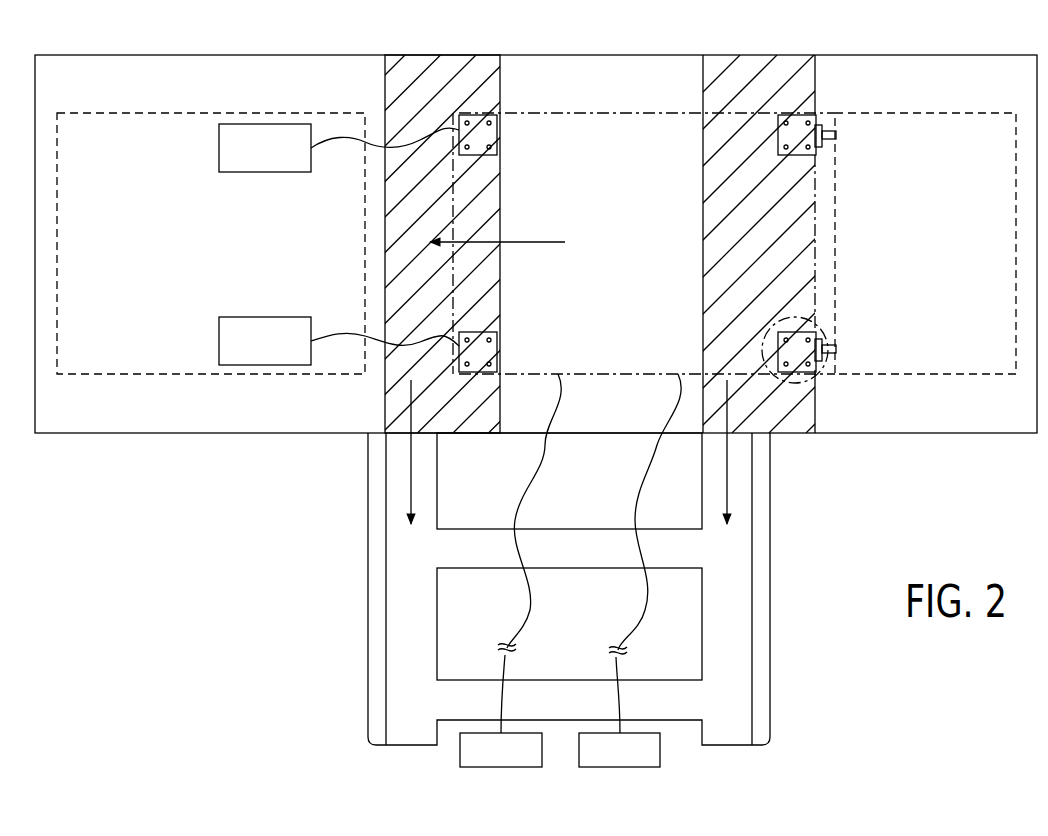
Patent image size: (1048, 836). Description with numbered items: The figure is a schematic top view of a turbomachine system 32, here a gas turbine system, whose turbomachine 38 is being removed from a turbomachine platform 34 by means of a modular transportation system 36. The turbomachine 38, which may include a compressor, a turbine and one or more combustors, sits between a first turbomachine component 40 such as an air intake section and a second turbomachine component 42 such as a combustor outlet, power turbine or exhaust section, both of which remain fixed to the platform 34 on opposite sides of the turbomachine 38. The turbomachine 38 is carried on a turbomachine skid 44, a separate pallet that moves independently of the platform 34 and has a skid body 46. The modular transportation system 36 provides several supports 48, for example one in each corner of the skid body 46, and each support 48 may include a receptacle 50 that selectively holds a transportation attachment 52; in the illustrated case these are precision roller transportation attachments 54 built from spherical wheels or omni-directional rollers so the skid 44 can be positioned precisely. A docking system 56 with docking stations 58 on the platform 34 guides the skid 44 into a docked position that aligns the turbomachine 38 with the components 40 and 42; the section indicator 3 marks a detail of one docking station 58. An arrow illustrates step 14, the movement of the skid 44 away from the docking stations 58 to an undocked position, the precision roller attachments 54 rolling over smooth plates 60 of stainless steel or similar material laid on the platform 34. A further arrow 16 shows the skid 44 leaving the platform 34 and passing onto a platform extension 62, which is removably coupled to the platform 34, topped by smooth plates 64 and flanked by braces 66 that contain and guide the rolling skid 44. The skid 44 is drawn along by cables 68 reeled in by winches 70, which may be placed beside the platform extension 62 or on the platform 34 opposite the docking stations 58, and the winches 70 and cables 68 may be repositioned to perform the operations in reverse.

The section line 3- 3 is at (822, 318).
The step of moving the skid from a docked position to an undocked position 14 is at (530, 242).
The arrow 16 is at (386, 455).
The turbomachine system 32 is at (228, 30).
The turbomachine platform 34 is at (930, 55).
The modular transportation system 36 is at (800, 410).
The turbomachine 38 is at (595, 130).
The first turbomachine component 40 is at (178, 123).
The second turbomachine component 42 is at (932, 123).
The turbomachine skid 44 is at (588, 112).
The skid body 46 is at (640, 113).
The support 48 is at (790, 113).
The receptacle 50 is at (467, 130).
The transportation attachment 52 is at (502, 135).
The precision roller transportation attachment 54 is at (478, 127).
The docking system 56 is at (855, 245).
The docking station 58 is at (820, 150).
The smooth plate 60 is at (421, 62).
The platform extension 62 is at (740, 697).
The smooth plate 64 is at (400, 655).
The brace 66 is at (375, 585).
The cable 68 is at (350, 125).
The winch 70 is at (257, 172).